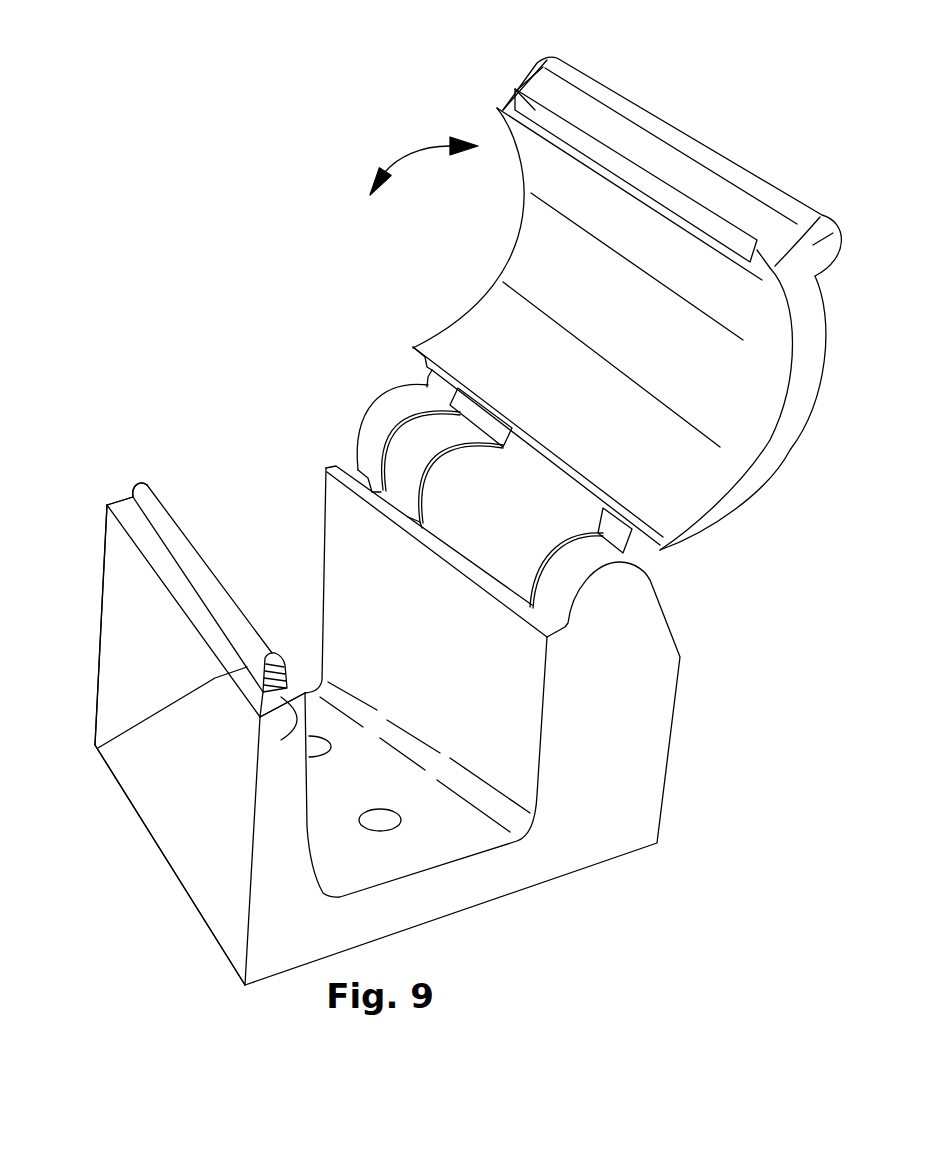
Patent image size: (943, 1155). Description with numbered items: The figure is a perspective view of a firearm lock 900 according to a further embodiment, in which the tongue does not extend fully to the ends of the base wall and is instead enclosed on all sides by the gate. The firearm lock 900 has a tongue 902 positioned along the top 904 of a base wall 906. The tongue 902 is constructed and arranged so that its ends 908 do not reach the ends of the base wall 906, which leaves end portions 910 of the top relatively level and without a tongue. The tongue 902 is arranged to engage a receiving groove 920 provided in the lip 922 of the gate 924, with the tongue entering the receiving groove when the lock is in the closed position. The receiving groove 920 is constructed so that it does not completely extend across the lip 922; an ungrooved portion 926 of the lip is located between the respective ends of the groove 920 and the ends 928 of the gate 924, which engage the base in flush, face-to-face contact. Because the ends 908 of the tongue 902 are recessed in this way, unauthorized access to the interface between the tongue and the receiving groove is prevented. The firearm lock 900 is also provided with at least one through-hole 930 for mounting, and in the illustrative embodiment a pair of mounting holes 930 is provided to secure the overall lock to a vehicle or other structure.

The firearm lock 900 is at (158, 449).
The tongue 902 is at (205, 520).
The top 904 is at (98, 748).
The base wall 906 is at (162, 637).
The ends 908 is at (137, 501).
The end portions 910 is at (107, 503).
The receiving groove 920 is at (506, 102).
The lip 922 is at (543, 66).
The gate 924 is at (697, 101).
The ungrooved portion 926 is at (503, 104).
The ends 928 is at (545, 58).
The through-hole 930 is at (380, 808).